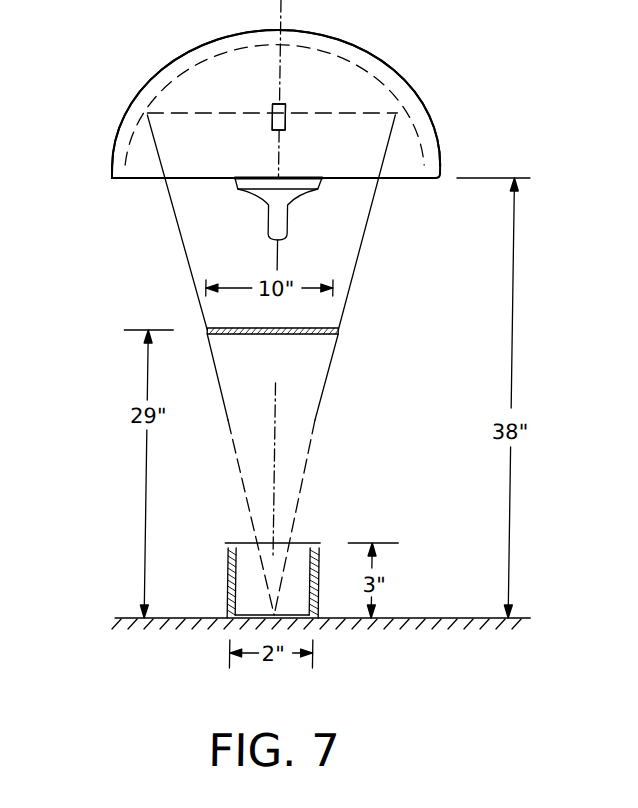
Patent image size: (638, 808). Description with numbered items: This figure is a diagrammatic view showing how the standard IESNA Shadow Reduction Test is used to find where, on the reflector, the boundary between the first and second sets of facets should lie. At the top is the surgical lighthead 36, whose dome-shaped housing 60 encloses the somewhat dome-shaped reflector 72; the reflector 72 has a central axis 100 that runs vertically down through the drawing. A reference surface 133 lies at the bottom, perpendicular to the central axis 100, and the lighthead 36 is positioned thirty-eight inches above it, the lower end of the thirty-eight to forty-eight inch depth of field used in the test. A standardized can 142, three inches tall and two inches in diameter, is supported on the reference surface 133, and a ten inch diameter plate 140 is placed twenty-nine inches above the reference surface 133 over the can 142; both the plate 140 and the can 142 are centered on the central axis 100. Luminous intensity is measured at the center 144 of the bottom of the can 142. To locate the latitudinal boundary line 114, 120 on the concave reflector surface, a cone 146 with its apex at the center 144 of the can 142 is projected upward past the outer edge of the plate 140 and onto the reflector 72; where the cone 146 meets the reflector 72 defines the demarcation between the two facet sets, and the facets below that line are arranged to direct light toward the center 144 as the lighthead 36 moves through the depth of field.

The lighthead 36 is at (131, 63).
The dome-shaped housing 60 is at (135, 109).
The reflector 72 is at (191, 61).
The central axis 100 is at (285, 22).
The latitudinal boundary line 114 is at (358, 111).
The latitudinal boundary line 120 is at (278, 117).
The cone 146 is at (360, 257).
The plate 140 is at (346, 338).
The can 142 is at (236, 557).
The center of the bottom of can 144 is at (281, 616).
The reference surface 133 is at (439, 620).